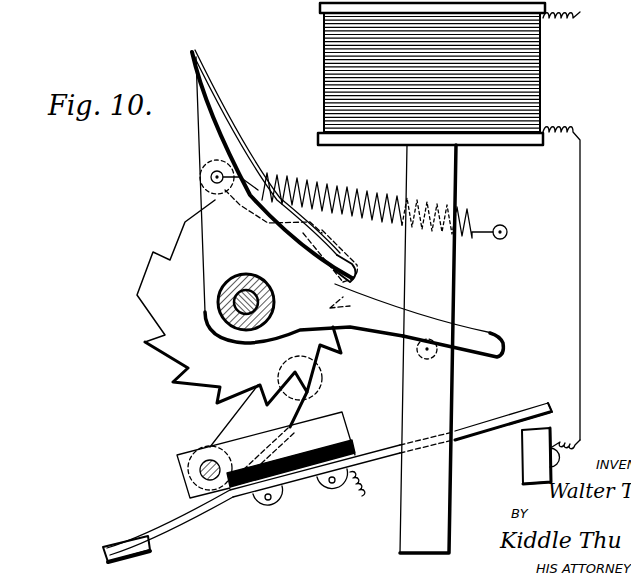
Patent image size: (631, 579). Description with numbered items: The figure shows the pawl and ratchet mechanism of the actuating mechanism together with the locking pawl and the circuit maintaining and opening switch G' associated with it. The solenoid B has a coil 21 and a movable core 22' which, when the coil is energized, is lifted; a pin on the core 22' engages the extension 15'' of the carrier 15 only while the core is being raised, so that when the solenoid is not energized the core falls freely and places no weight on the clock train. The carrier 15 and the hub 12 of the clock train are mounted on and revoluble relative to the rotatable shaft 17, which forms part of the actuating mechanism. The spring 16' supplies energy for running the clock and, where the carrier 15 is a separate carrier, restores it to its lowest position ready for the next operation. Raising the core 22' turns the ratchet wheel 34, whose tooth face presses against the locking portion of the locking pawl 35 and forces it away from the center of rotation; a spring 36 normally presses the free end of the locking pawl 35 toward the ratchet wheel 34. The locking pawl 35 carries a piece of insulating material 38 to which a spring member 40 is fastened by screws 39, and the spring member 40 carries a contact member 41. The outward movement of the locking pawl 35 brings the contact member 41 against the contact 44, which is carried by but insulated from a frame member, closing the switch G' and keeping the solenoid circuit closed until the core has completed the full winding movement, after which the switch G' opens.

The solenoid B is at (543, 62).
The coil 21 is at (540, 108).
The core 22' is at (449, 349).
The carrier 15 is at (279, 196).
The extension 15'' is at (437, 320).
The spring 16' is at (384, 194).
The hub 12 is at (275, 303).
The shaft 17 is at (234, 310).
The ratchet wheel 34 is at (175, 280).
The locking pawl 35 is at (310, 396).
The insulating material 38 is at (215, 450).
The spring 36 is at (200, 514).
The screws 39 is at (327, 483).
The spring member 40 is at (388, 457).
The contact member 41 is at (555, 404).
The maintaining and opening switch G' is at (540, 390).
The contact 44 is at (523, 450).